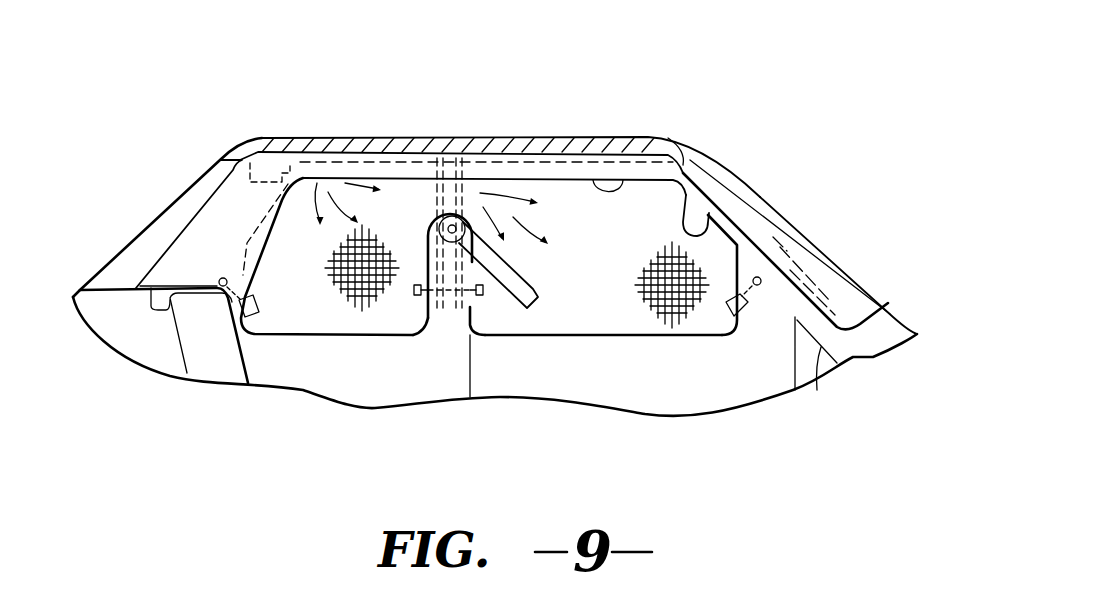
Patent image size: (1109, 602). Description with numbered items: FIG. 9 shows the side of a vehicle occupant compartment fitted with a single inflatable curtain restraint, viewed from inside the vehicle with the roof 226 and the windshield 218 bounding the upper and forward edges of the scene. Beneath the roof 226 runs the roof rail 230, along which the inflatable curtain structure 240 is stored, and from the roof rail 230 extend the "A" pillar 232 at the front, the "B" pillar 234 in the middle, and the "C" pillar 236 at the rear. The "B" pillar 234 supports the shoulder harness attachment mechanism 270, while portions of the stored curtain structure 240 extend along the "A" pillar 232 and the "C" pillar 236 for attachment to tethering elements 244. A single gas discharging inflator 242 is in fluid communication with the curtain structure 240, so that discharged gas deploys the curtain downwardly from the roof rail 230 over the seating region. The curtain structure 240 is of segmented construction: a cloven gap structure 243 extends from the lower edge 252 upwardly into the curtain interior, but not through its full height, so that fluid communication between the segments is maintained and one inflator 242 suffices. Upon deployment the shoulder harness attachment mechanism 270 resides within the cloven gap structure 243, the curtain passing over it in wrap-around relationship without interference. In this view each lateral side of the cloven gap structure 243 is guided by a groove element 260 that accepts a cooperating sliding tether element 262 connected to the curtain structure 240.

The windshield 218 is at (770, 203).
The roof 226 is at (510, 135).
The roof rail 230 is at (647, 170).
The "A" pillar 232 is at (690, 196).
The "B" pillar 234 is at (482, 334).
The "C" pillar 236 is at (262, 312).
The inflatable curtain structure 240 is at (682, 352).
The gas discharging inflator 242 is at (270, 146).
The cloven gap structure 243 is at (430, 223).
The tethering elements 244 is at (740, 305).
The lower edge 252 is at (620, 338).
The groove element 260 is at (445, 312).
The sliding tether element 262 is at (414, 291).
The shoulder harness attachment mechanism 270 is at (458, 226).